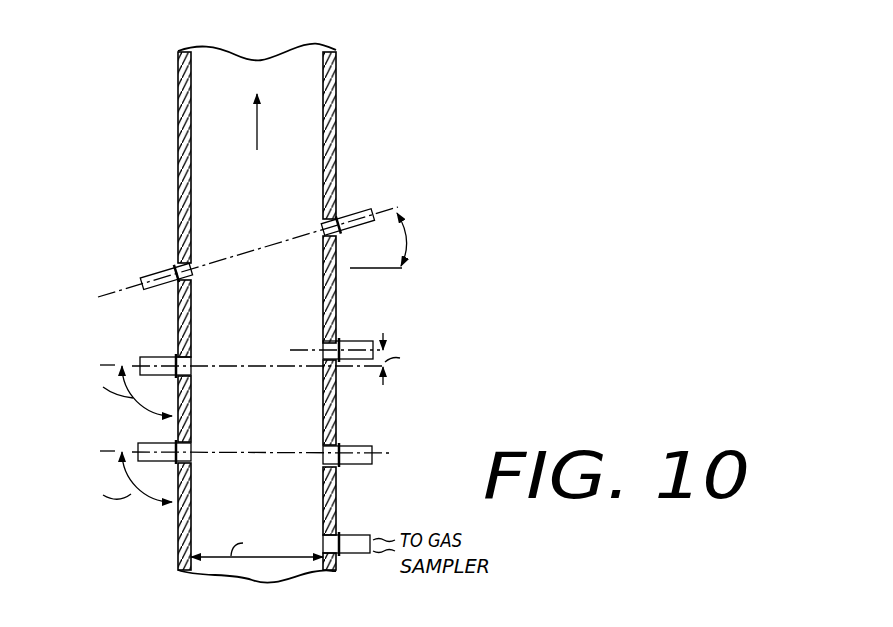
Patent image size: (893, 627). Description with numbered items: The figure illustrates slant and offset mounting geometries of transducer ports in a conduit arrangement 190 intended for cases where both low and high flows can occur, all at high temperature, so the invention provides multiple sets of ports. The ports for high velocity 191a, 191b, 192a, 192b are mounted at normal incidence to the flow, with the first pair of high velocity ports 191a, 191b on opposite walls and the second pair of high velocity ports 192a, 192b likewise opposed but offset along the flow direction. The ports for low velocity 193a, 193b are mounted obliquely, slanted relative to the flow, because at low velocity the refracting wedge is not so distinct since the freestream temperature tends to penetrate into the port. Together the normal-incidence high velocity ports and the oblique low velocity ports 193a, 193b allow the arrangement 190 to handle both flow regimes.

The gas sampling pipe assembly 190 is at (110, 277).
The oblique sampling probe (low flow) 193a is at (161, 268).
The oblique sampling probe (low flow) 193b is at (364, 206).
The port for high velocity 192a is at (152, 357).
The port for high velocity 192b is at (362, 341).
The port for high velocity 191a is at (146, 443).
The port for high velocity 191b is at (365, 446).